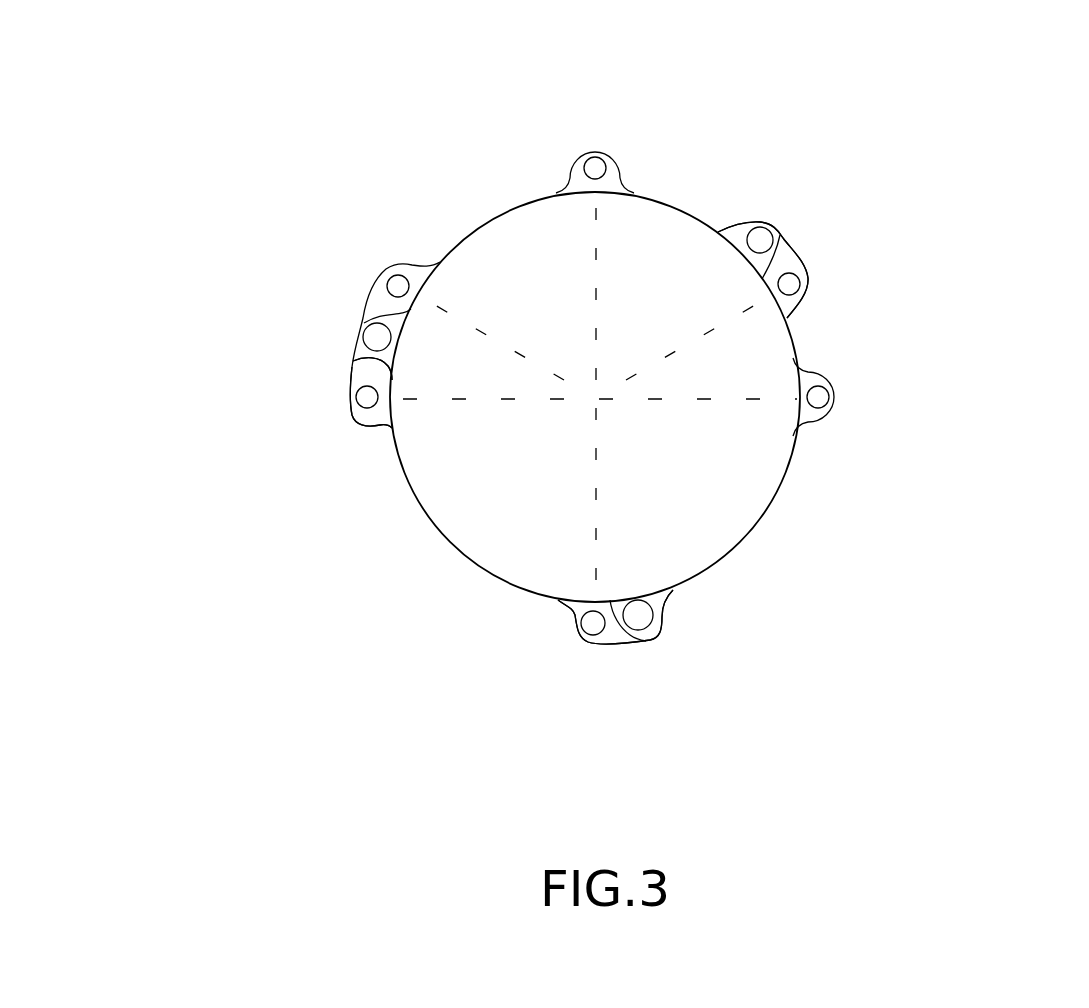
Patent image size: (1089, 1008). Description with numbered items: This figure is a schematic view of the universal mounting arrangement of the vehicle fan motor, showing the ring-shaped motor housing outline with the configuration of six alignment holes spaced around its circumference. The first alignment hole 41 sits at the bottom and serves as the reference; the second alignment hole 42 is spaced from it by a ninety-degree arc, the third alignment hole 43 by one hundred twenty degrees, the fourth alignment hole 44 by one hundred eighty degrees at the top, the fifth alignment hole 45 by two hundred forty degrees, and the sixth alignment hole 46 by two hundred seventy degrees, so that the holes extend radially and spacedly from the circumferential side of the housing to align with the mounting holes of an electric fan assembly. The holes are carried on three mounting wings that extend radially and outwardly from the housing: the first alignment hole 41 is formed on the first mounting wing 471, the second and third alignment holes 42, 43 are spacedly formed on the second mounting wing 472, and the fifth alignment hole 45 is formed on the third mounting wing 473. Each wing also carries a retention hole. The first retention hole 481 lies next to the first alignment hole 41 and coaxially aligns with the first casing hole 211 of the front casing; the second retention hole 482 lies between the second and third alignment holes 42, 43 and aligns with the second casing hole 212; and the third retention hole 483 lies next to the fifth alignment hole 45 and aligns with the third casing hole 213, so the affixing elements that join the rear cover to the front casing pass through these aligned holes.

The first alignment hole 41 is at (580, 638).
The second alignment hole 42 is at (357, 409).
The third alignment hole 43 is at (378, 278).
The fourth alignment hole 44 is at (601, 152).
The fifth alignment hole 45 is at (808, 271).
The sixth alignment hole 46 is at (836, 392).
The first casing hole 211 is at (669, 603).
The second casing hole 212 is at (357, 332).
The third casing hole 213 is at (757, 223).
The first mounting wing 471 is at (571, 610).
The second mounting wing 472 is at (380, 414).
The third mounting wing 473 is at (808, 287).
The first retention hole 481 is at (648, 636).
The second retention hole 482 is at (357, 351).
The third retention hole 483 is at (781, 220).